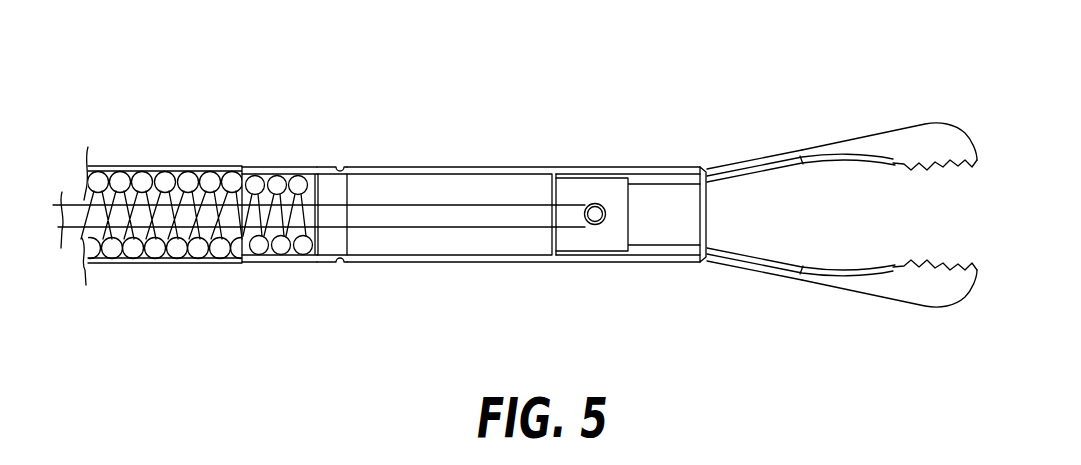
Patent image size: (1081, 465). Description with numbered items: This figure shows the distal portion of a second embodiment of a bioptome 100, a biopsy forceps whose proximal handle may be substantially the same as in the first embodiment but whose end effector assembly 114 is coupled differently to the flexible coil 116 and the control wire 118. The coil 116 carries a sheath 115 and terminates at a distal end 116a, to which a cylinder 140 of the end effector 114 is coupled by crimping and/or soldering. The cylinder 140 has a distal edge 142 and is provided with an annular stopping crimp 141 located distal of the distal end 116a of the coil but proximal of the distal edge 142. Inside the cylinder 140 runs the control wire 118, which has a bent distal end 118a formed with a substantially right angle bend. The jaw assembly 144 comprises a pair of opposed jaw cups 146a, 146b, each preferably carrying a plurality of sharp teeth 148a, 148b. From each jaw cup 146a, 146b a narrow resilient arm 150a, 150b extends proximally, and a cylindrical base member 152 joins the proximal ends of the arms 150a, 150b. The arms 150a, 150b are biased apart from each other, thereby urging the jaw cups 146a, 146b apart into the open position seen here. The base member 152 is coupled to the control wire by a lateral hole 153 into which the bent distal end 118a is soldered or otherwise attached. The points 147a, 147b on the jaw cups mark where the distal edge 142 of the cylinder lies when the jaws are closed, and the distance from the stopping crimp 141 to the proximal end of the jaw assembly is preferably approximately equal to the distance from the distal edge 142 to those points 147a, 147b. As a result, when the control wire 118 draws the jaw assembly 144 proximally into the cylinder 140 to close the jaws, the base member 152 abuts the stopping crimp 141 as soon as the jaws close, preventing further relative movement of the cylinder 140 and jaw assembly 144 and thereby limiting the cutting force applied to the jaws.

The bioptome 100 is at (262, 346).
The end effector assembly 114 is at (803, 367).
The sheath 115 is at (135, 166).
The coil 116 is at (190, 182).
The distal end of the coil 116a is at (303, 247).
The control wire 118 is at (357, 216).
The distal end of the control wire 118a is at (595, 226).
The cylinder 140 is at (428, 264).
The annular stopping crimp 141 is at (340, 268).
The distal edge 142 is at (705, 167).
The jaw assembly 144 is at (990, 82).
The jaw cup 146a is at (948, 141).
The jaw cup 146b is at (942, 290).
The point on the jaw cup 147a is at (923, 124).
The point on the jaw cup 147b is at (913, 305).
The sharp teeth 148a is at (957, 170).
The sharp teeth 148b is at (952, 262).
The resilient arm 150a is at (773, 160).
The resilient arm 150b is at (753, 268).
The cylindrical base member 152 is at (603, 188).
The lateral hole 153 is at (610, 212).